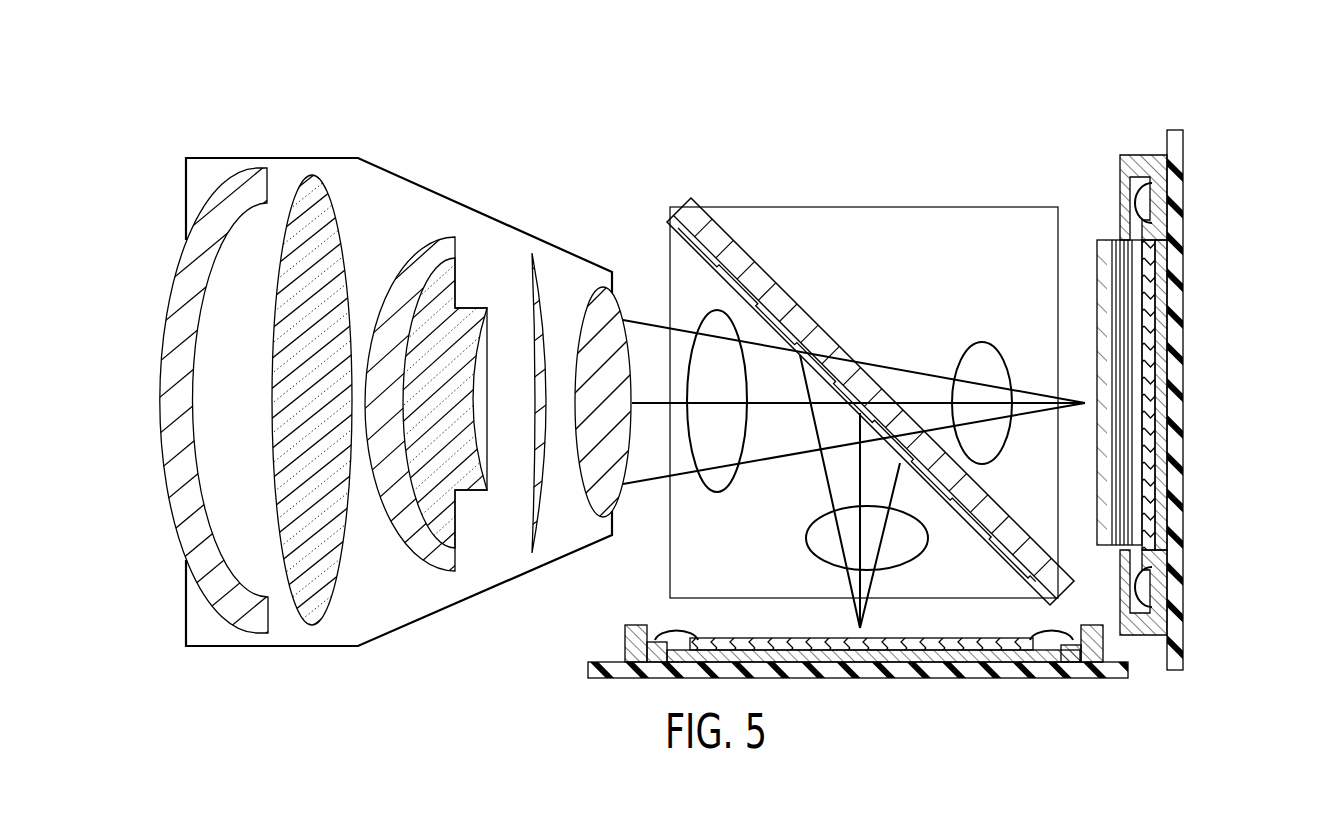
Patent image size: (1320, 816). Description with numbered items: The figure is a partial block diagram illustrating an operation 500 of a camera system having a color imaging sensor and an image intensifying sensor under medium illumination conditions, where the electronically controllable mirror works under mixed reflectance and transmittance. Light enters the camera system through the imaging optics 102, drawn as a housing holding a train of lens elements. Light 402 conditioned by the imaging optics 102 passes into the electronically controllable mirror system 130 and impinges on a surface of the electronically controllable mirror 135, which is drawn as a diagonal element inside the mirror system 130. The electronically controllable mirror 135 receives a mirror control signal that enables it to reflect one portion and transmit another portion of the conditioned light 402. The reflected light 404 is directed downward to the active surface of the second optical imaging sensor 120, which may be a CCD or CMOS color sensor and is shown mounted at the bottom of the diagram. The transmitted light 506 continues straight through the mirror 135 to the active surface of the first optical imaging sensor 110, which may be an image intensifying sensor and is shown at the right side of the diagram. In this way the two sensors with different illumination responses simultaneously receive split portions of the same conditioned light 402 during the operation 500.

The operation 500 is at (1046, 96).
The imaging optics 102 is at (322, 158).
The first optical imaging sensor 110 is at (1173, 368).
The second optical imaging sensor 120 is at (630, 630).
The electronically controllable mirror system 130 is at (928, 188).
The electronically controllable mirror 135 is at (745, 300).
The conditioned light 402 is at (707, 498).
The reflected light 404 is at (822, 560).
The transmitted light 506 is at (1003, 350).